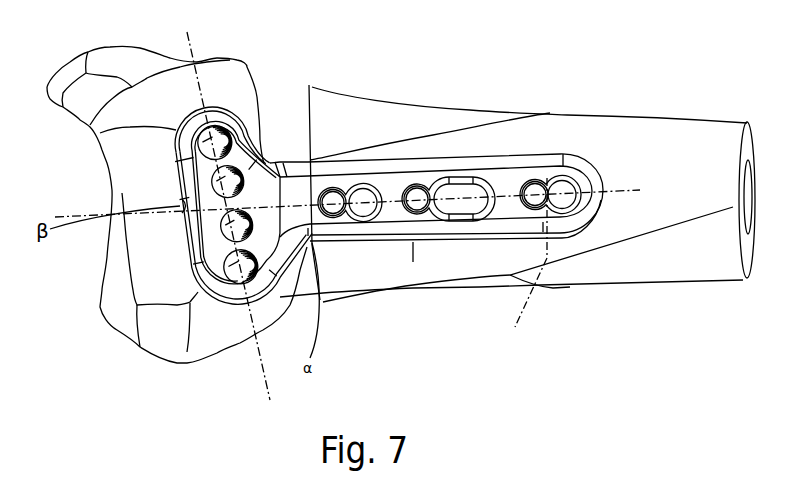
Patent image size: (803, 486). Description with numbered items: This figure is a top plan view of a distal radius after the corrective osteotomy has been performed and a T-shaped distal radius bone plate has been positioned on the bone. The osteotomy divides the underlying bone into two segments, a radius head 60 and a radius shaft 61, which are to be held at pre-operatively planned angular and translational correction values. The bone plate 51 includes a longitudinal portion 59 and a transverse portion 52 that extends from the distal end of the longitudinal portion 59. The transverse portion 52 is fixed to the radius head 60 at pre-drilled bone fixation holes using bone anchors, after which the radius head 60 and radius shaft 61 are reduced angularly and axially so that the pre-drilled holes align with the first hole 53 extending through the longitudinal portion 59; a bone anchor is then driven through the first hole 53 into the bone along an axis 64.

The bone plate 51 is at (600, 170).
The transverse portion 52 is at (197, 158).
The first hole 53 is at (447, 193).
The longitudinal portion 59 is at (413, 240).
The radius head 60 is at (291, 140).
The radius shaft 61 is at (545, 133).
The axis 64 is at (527, 264).